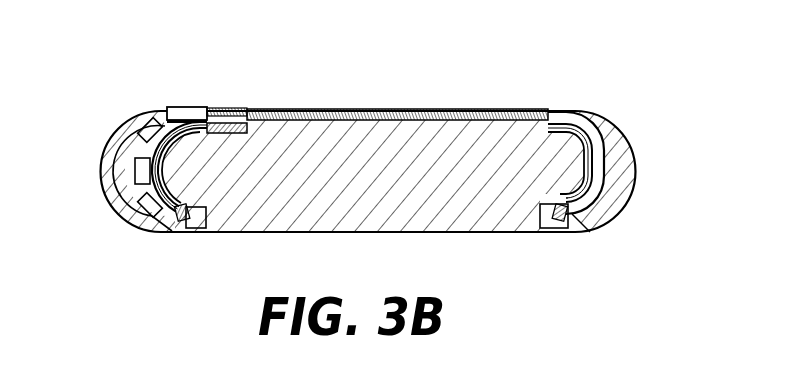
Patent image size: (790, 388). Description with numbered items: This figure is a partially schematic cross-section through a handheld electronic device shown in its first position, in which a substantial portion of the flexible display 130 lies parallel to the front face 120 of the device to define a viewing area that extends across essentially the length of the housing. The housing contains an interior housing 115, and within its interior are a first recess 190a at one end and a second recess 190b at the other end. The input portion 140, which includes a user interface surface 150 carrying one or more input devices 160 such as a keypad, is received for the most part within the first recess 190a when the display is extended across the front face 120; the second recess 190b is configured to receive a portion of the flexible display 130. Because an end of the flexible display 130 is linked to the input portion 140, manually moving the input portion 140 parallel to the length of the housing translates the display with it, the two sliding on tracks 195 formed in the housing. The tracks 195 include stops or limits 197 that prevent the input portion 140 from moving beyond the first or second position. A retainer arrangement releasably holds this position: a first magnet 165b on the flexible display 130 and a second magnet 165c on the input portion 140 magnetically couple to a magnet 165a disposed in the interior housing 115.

The interior housing 115 is at (406, 179).
The front face 120 is at (586, 110).
The flexible display 130 is at (414, 109).
The input portion 140 is at (164, 96).
The user interface surface 150 is at (120, 196).
The input device 160 is at (182, 106).
The magnet 165a is at (226, 108).
The first magnet 165b is at (240, 121).
The second magnet 165c is at (176, 215).
The first recess 190a is at (104, 146).
The second recess 190b is at (601, 120).
The tracks 195 is at (140, 195).
The stops or limits 197 is at (190, 228).